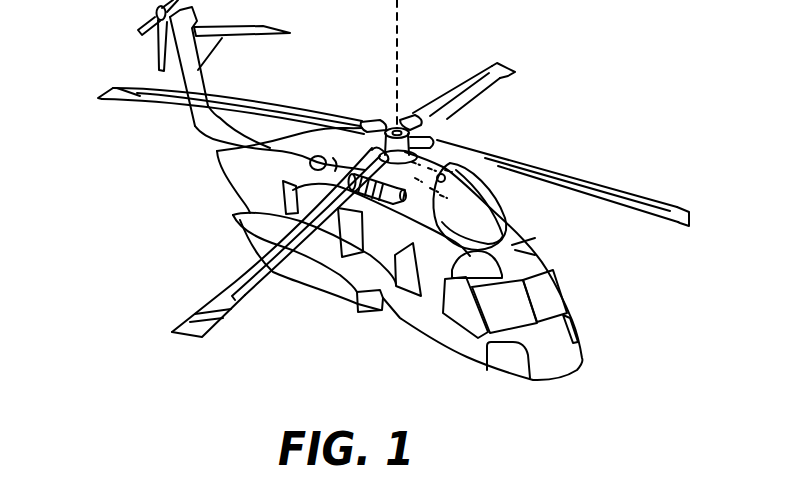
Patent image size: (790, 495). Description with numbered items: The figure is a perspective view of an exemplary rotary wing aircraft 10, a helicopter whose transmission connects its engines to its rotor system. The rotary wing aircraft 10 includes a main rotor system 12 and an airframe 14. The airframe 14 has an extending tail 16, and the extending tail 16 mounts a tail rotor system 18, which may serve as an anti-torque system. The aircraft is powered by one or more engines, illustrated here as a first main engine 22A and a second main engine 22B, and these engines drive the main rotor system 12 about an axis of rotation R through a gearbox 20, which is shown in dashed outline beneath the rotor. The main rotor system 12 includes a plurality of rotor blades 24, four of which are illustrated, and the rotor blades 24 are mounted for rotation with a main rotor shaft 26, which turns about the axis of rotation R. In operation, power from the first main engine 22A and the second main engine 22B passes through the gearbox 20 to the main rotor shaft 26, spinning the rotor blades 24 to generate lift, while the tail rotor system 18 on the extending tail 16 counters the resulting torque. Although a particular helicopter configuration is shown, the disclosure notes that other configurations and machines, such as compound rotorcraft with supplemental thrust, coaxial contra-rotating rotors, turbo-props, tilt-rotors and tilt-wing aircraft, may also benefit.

The rotary wing aircraft 10 is at (178, 358).
The main rotor system 12 is at (534, 155).
The airframe 14 is at (423, 326).
The extending tail 16 is at (197, 127).
The tail rotor system 18 is at (140, 42).
The gearbox 20 is at (450, 163).
The first main engine 22A is at (358, 184).
The second main engine 22B is at (446, 185).
The rotor blades 24 is at (275, 110).
The main rotor shaft 26 is at (422, 123).
The axis of rotation R is at (400, 42).